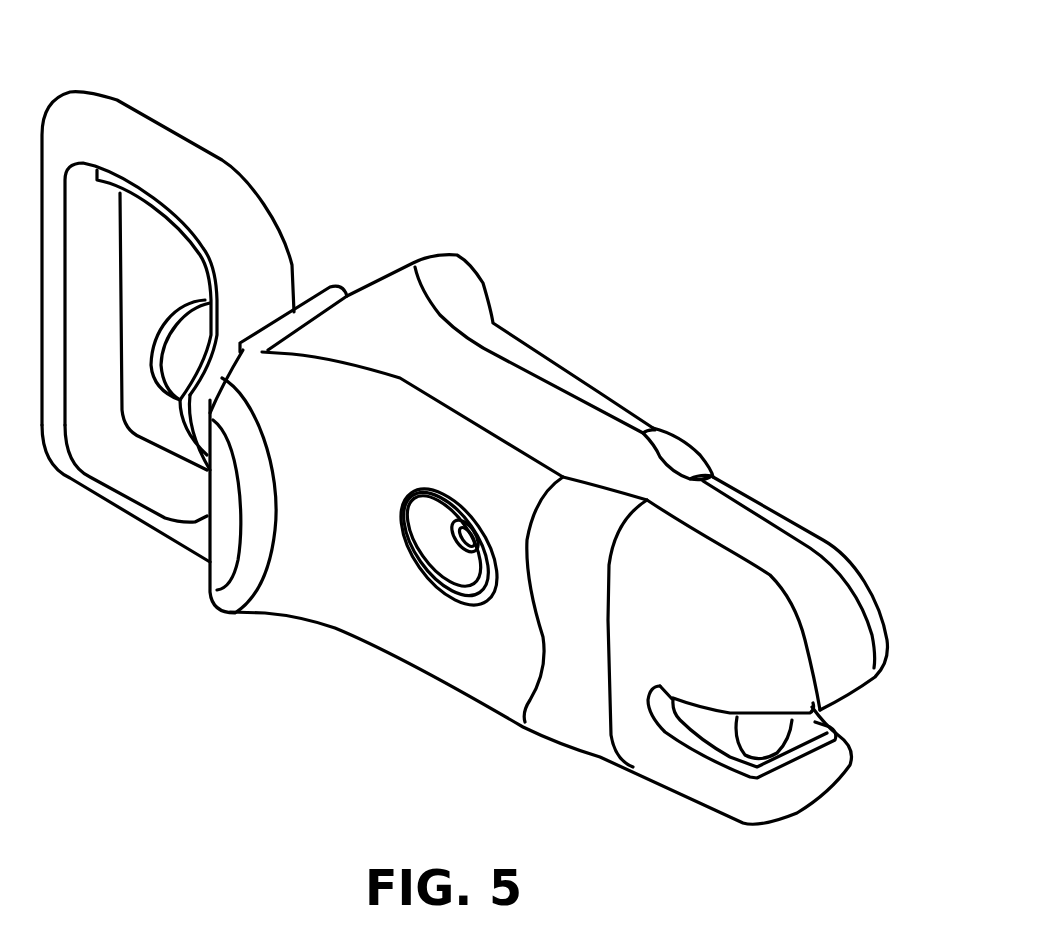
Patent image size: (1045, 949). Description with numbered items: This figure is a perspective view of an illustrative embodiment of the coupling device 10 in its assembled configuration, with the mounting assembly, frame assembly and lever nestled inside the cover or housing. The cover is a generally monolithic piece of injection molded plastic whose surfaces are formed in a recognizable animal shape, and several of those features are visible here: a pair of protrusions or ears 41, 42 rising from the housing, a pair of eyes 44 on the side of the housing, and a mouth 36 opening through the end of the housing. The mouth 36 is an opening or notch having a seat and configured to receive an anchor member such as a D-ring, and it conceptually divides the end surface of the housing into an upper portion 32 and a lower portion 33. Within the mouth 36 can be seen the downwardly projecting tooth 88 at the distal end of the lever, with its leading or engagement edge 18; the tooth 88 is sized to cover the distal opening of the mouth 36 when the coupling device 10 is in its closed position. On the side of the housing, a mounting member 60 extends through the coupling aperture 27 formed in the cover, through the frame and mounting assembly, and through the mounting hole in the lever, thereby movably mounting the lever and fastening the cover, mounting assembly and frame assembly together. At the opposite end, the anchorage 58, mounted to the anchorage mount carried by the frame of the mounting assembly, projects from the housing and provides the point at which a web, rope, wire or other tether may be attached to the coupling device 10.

The coupling device 10 is at (375, 110).
The anchorage 58 is at (157, 143).
The ear 41 is at (253, 547).
The ear 42 is at (463, 287).
The eyes 44 is at (705, 461).
The upper portion of end surface 32 is at (863, 600).
The lower portion of end surface 33 is at (807, 783).
The mouth 36 is at (860, 707).
The leading or engagement edge 18 is at (833, 733).
The tooth 88 is at (747, 752).
The mounting member 60 is at (440, 532).
The coupling aperture 27 is at (452, 590).